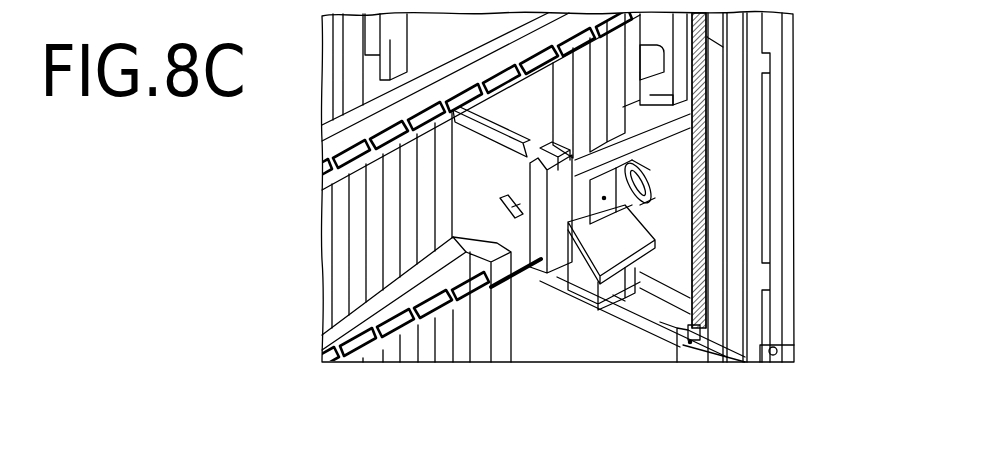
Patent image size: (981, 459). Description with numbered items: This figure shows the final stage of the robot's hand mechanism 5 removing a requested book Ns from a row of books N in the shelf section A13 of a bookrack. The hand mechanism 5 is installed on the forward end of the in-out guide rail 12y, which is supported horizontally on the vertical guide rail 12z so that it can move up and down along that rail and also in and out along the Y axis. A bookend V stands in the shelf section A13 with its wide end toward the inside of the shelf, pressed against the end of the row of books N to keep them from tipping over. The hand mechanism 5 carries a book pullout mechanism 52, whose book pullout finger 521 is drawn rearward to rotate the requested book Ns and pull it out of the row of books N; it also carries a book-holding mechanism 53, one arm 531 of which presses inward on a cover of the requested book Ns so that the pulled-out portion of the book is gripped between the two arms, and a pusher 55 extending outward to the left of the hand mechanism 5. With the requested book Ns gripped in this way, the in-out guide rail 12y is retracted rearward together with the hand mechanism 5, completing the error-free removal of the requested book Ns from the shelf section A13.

The row of books N is at (350, 139).
The requested book Ns is at (477, 120).
The book pullout finger 521 is at (527, 153).
The book-holding mechanism 53 is at (547, 197).
The arm 531 is at (520, 206).
The book pullout mechanism 52 is at (623, 200).
The pusher 55 is at (517, 278).
The hand mechanism 5 is at (591, 293).
The bookend V is at (512, 333).
The in-out guide rail 12y is at (662, 296).
The vertical guide rail 12z is at (756, 208).
The shelf section A13 is at (770, 56).